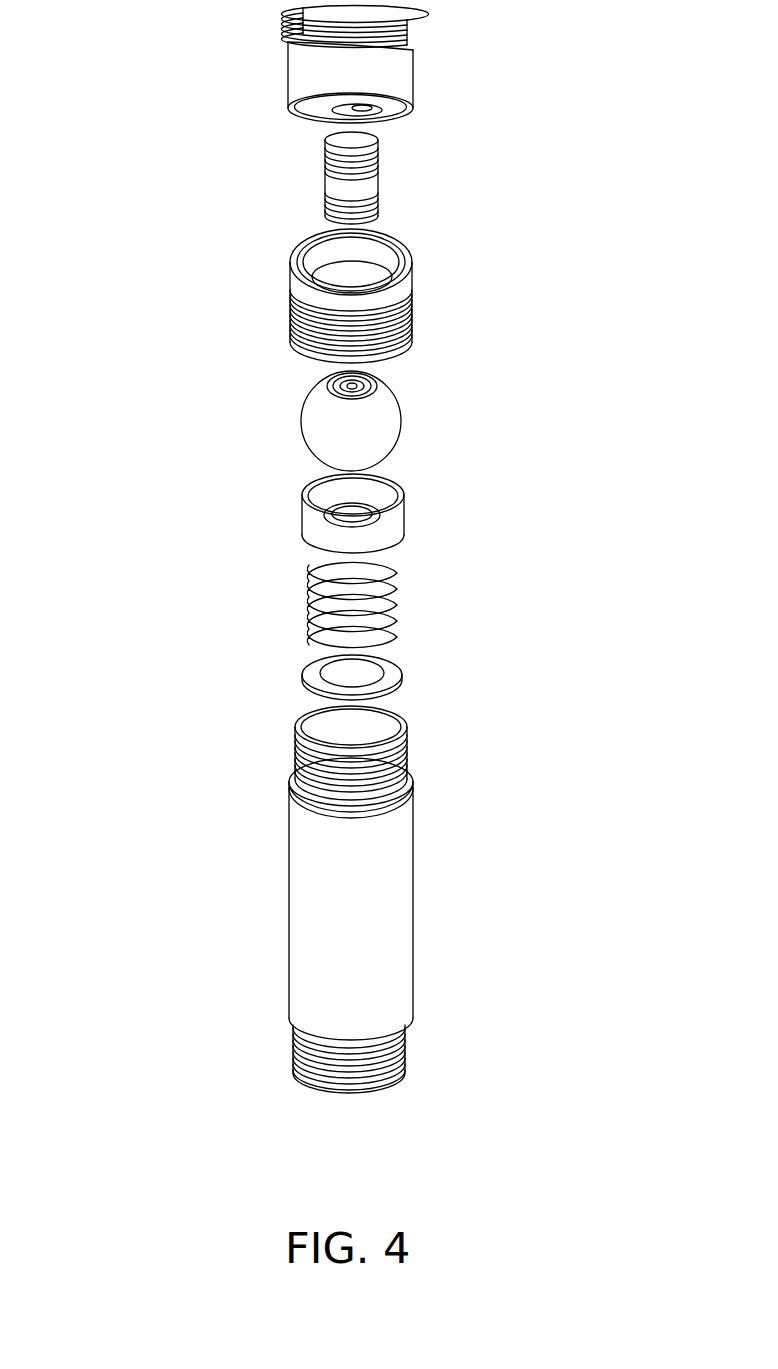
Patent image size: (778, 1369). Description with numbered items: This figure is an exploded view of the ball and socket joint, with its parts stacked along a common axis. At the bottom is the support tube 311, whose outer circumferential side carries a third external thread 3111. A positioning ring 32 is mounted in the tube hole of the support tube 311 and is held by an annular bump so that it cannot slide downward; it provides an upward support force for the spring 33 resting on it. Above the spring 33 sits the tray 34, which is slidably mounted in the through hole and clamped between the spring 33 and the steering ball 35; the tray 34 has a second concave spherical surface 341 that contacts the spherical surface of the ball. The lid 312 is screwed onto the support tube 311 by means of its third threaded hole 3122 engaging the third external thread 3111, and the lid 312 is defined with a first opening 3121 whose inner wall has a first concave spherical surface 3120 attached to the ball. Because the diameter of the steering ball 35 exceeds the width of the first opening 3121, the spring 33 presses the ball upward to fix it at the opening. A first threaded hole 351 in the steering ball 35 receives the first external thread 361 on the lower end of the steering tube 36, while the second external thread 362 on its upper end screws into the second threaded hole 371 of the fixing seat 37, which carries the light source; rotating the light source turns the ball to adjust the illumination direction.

The fixing seat 37 is at (447, 70).
The second threaded hole 371 is at (395, 106).
The steering tube 36 is at (466, 183).
The second external thread 362 is at (375, 148).
The first external thread 361 is at (375, 212).
The lid 312 is at (346, 296).
The first concave spherical surface 3120 is at (300, 262).
The first opening 3121 is at (398, 254).
The third threaded hole 3122 is at (410, 330).
The steering ball 35 is at (452, 421).
The first threaded hole 351 is at (380, 385).
The tray 34 is at (344, 515).
The second concave spherical surface 341 is at (315, 508).
The spring 33 is at (393, 595).
The positioning ring 32 is at (393, 690).
The support tube 311 is at (449, 899).
The third external thread 3111 is at (407, 757).